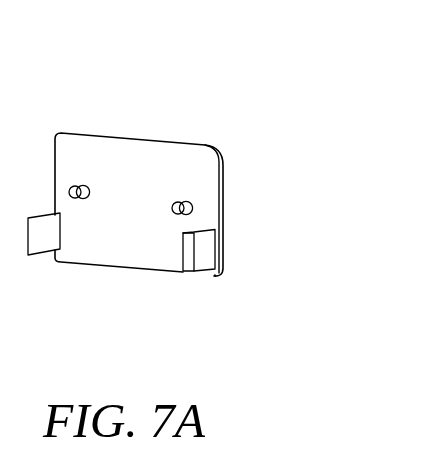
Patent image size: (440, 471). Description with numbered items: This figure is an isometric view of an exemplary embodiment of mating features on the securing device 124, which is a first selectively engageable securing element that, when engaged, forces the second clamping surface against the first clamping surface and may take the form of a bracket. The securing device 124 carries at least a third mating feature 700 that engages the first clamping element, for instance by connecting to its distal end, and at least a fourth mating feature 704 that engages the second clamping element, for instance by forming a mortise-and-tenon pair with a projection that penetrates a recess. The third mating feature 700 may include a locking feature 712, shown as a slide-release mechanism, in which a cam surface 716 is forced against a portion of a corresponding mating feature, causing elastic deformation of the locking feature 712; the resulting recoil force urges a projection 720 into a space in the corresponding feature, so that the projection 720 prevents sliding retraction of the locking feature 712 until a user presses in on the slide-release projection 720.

The third mating feature 700 is at (183, 244).
The fourth mating feature 704 is at (181, 202).
The first selectively engageable securing element 124 is at (207, 170).
The locking feature 712 is at (203, 230).
The cam surface 716 is at (235, 205).
The projection 720 is at (280, 205).